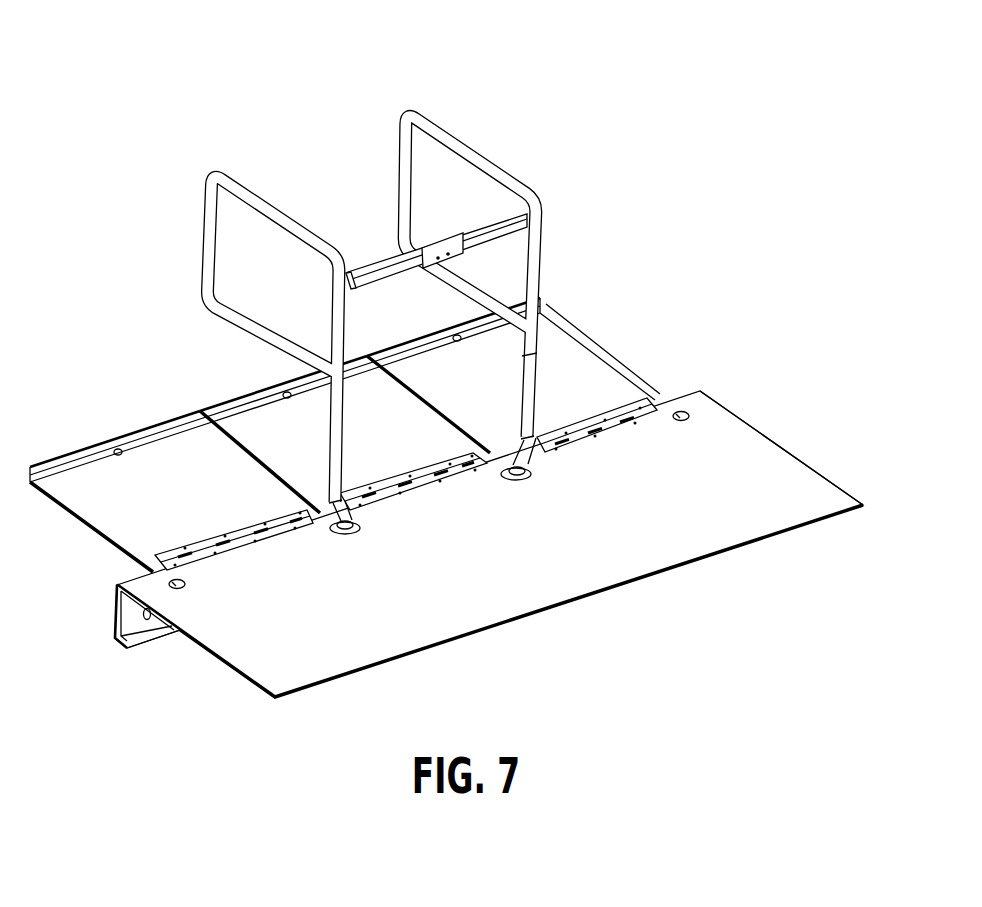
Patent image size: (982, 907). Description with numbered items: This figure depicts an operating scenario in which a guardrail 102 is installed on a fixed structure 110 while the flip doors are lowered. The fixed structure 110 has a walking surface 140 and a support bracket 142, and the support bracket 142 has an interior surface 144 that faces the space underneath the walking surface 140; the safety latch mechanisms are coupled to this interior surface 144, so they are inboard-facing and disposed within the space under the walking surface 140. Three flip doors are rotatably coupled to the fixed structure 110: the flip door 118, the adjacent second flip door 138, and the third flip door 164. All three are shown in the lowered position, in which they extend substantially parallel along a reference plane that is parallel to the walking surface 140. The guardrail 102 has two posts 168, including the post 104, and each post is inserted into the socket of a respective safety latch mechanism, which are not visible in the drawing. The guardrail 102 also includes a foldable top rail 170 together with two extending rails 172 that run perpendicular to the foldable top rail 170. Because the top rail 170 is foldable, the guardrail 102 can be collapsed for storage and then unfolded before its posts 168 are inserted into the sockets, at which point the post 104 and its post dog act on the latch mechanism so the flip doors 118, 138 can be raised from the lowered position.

The guardrail 102 is at (425, 273).
The post 104 is at (536, 273).
The fixed structure 110 is at (463, 506).
The flip door 118 is at (273, 423).
The second flip door 138 is at (567, 382).
The walking surface 140 is at (673, 533).
The support bracket 142 is at (136, 649).
The interior surface 144 is at (139, 622).
The third flip door 164 is at (117, 473).
The posts 168 is at (358, 358).
The foldable top rail 170 is at (393, 263).
The extending rails 172 is at (230, 174).